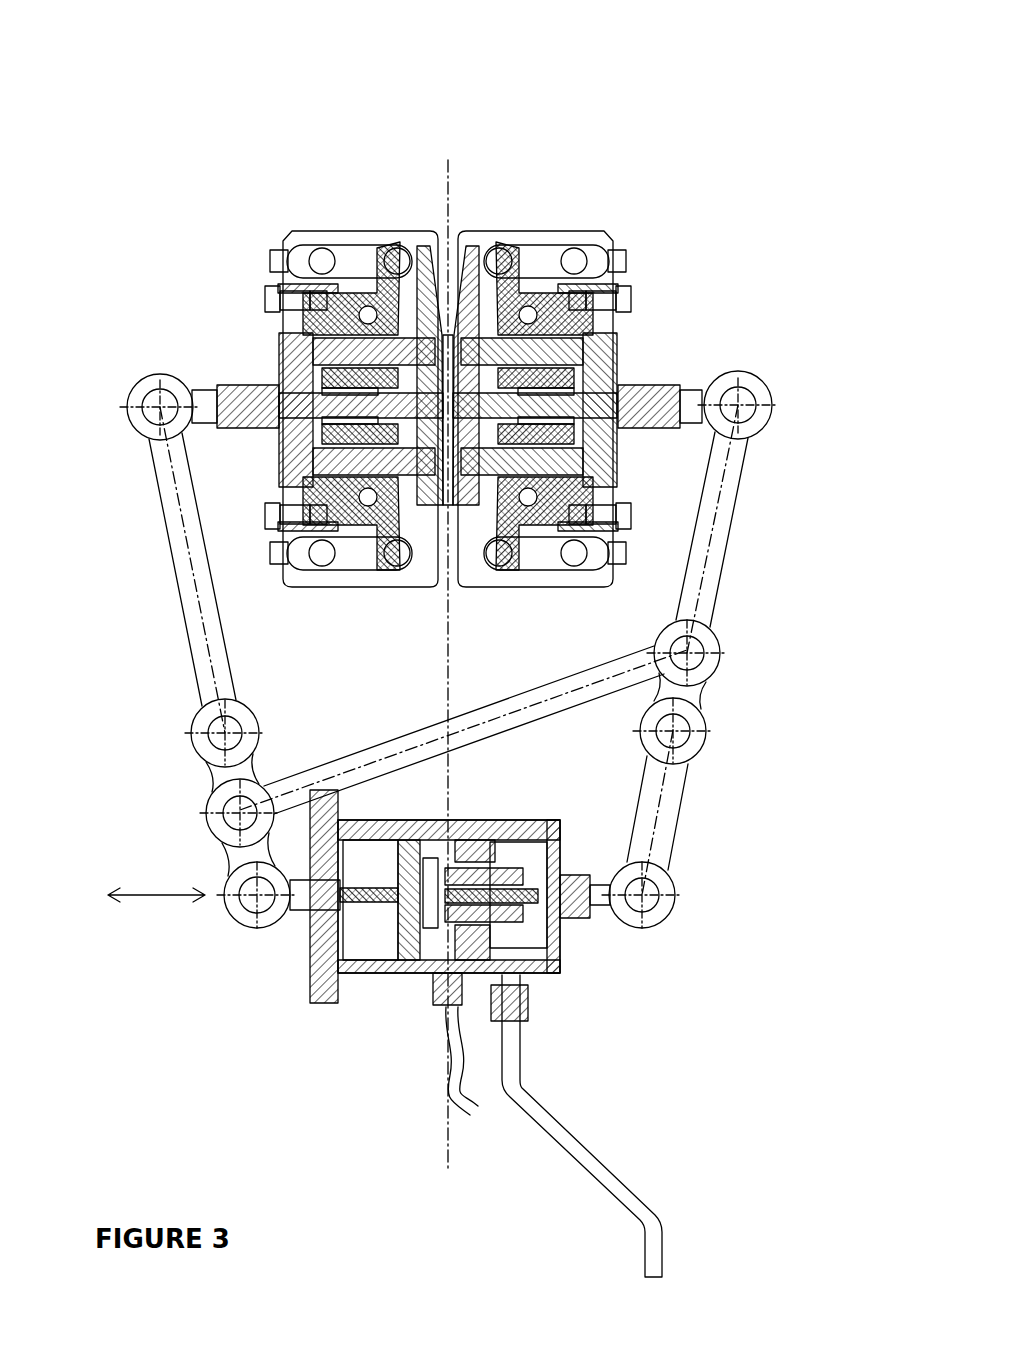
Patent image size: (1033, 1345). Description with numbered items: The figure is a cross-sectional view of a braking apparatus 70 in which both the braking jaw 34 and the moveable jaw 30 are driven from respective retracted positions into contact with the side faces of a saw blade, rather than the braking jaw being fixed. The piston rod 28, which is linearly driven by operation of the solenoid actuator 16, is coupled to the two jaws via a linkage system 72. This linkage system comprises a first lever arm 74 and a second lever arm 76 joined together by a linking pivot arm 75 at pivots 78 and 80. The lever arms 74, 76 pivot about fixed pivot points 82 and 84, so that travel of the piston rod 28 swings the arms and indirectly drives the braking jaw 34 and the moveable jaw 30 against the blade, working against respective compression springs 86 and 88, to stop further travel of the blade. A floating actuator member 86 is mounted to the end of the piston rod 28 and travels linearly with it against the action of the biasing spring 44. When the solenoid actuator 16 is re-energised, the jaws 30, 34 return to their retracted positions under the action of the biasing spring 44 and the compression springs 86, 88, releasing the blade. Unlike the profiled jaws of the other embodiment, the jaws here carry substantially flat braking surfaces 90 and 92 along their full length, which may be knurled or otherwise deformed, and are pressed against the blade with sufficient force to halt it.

The braking apparatus 70 is at (717, 178).
The moveable jaw 30 is at (473, 252).
The braking jaw 34 is at (420, 308).
The flat braking surface 92 is at (457, 318).
The flat braking surface 90 is at (440, 488).
The compression spring 86 is at (243, 378).
The compression spring 88 is at (642, 376).
The first lever arm 74 is at (155, 495).
The linkage system 72 is at (755, 512).
The second lever arm 76 is at (712, 577).
The linking pivot arm 75 is at (530, 730).
The fixed pivot point 84 is at (660, 726).
The fixed pivot point 82 is at (215, 722).
The pivot 78 is at (212, 805).
The pivot 80 is at (705, 657).
The piston rod 28 is at (350, 897).
The solenoid actuator 16 is at (505, 928).
The biasing spring 44 is at (368, 935).